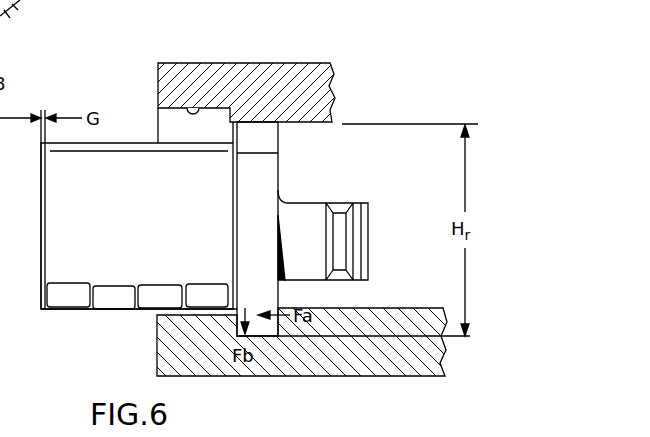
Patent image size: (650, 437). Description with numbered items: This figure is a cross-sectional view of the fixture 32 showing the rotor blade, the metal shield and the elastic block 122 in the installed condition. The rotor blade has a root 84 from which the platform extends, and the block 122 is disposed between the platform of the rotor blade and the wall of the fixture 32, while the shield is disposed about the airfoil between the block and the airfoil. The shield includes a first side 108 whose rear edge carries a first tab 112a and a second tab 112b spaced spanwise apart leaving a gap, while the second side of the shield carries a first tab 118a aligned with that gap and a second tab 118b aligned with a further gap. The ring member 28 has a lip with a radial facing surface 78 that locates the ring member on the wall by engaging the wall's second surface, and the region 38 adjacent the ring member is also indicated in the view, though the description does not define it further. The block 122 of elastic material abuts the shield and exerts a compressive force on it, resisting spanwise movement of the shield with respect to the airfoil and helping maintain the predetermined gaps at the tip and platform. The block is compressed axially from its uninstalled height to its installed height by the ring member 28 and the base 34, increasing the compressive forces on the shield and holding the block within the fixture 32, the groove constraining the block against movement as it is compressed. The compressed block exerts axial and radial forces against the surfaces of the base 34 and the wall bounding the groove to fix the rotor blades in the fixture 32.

The ring member 28 is at (250, 63).
The base 34 is at (385, 376).
The gap region / recess 38 is at (175, 127).
The radial facing surface 78 is at (197, 103).
The root 84 is at (364, 240).
The first side 108 is at (150, 193).
The first tab 112a is at (58, 283).
The second tab 112b is at (157, 285).
The first tab 118a is at (108, 300).
The second tab 118b is at (200, 300).
The block 122 is at (276, 175).
The fixture 32 is at (131, 344).